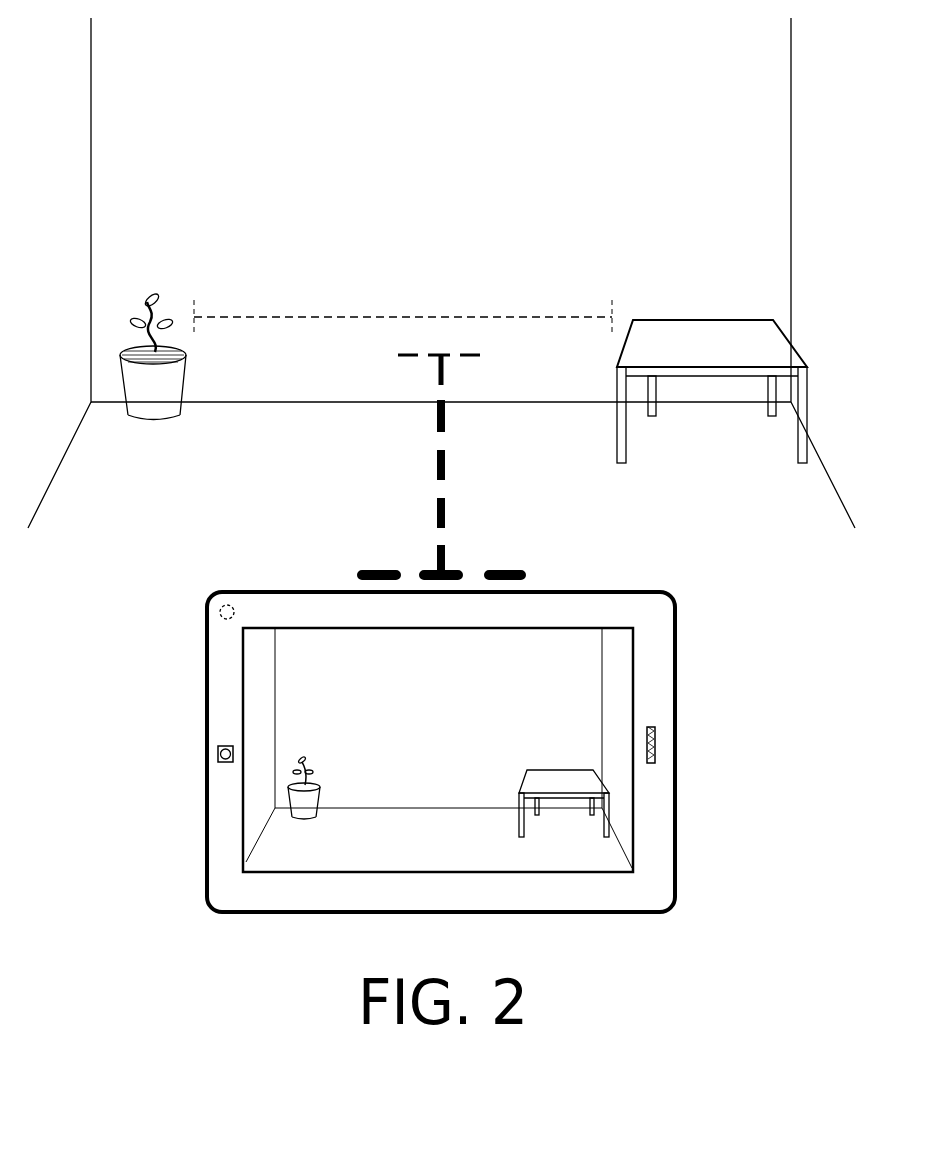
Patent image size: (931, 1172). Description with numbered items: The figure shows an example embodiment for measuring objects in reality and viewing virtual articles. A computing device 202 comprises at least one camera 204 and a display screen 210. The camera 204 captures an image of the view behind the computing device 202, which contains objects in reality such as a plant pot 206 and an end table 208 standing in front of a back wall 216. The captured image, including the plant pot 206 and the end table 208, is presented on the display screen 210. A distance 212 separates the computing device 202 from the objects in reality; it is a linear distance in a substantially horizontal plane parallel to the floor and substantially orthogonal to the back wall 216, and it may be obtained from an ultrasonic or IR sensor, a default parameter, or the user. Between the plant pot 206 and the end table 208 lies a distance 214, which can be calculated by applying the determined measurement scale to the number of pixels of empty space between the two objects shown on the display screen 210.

The computing device 202 is at (645, 592).
The camera 204 is at (230, 605).
The plant pot 206 is at (137, 418).
The end table 208 is at (680, 318).
The display screen 210 is at (634, 692).
The distance 212 is at (442, 501).
The distance 214 is at (490, 317).
The back wall 216 is at (441, 114).